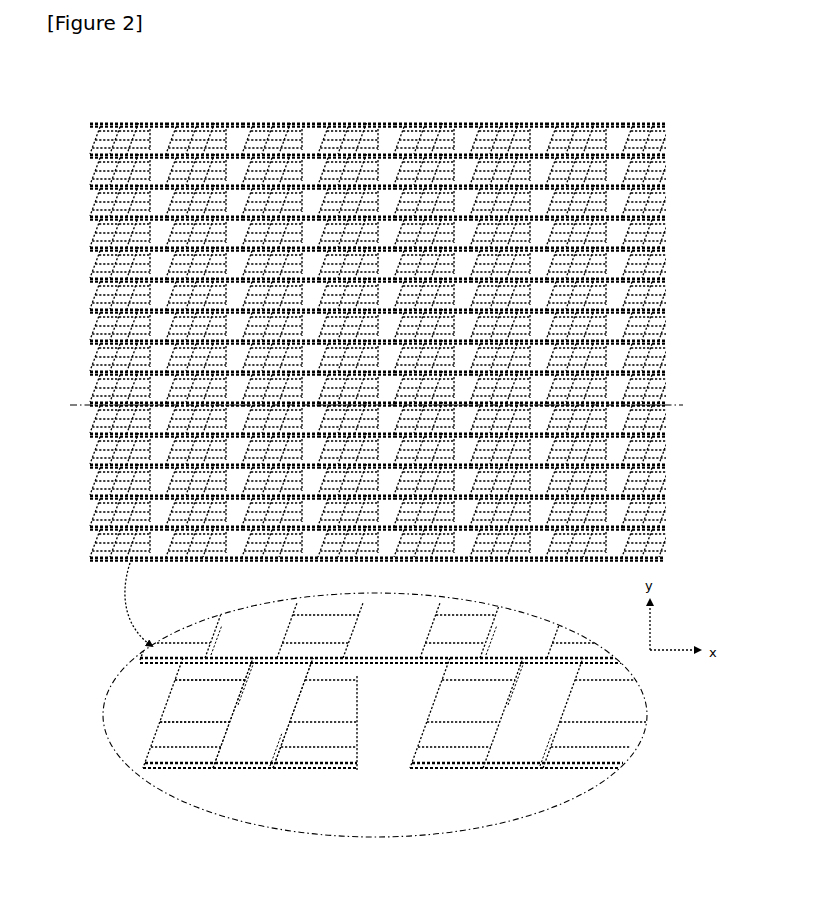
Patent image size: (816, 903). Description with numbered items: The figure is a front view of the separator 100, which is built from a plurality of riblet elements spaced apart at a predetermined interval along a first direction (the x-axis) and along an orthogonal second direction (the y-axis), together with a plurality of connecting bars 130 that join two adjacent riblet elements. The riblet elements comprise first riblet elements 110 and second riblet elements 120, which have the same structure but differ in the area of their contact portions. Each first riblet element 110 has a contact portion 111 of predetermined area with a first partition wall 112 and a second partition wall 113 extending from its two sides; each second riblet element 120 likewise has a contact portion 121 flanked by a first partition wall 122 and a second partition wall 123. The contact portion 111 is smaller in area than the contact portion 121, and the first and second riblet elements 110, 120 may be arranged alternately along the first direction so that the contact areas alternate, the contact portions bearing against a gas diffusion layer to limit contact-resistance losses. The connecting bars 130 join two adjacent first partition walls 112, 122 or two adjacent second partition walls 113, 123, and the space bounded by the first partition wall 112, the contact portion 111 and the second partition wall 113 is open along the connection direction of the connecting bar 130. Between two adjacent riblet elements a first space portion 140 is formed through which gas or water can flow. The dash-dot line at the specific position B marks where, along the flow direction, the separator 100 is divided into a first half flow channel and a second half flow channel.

The separator 100 is at (88, 61).
The specific position B is at (383, 406).
The first riblet element 110 is at (177, 776).
The contact portion 111 is at (200, 677).
The first partition wall 112 is at (200, 708).
The second partition wall 113 is at (202, 662).
The second riblet element 120 is at (320, 781).
The contact portion 121 is at (352, 672).
The first partition wall 122 is at (338, 705).
The second partition wall 123 is at (368, 612).
The connecting bar 130 is at (242, 778).
The first space portion 140 is at (414, 720).